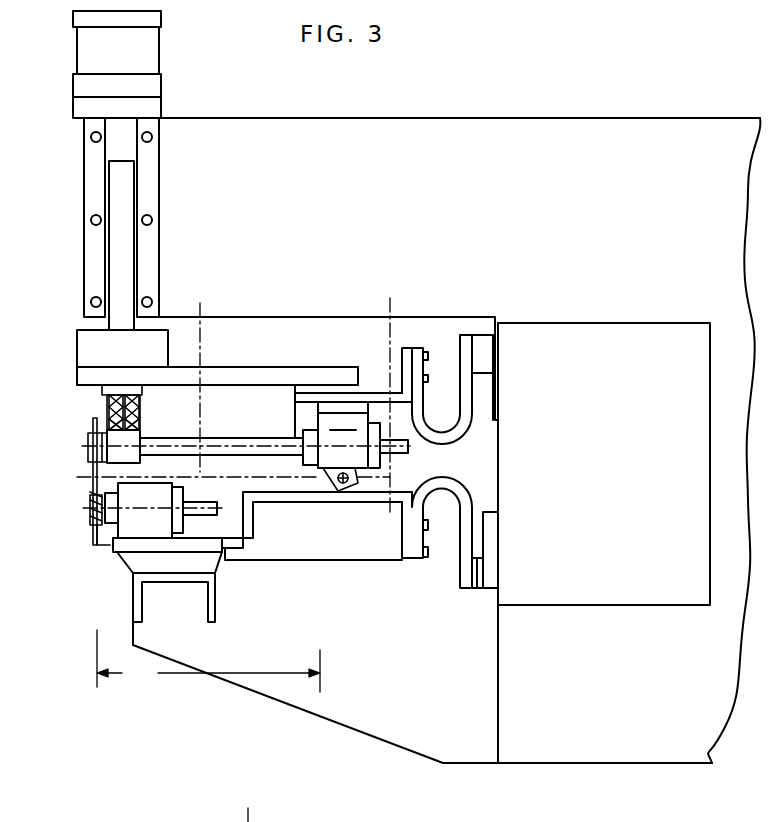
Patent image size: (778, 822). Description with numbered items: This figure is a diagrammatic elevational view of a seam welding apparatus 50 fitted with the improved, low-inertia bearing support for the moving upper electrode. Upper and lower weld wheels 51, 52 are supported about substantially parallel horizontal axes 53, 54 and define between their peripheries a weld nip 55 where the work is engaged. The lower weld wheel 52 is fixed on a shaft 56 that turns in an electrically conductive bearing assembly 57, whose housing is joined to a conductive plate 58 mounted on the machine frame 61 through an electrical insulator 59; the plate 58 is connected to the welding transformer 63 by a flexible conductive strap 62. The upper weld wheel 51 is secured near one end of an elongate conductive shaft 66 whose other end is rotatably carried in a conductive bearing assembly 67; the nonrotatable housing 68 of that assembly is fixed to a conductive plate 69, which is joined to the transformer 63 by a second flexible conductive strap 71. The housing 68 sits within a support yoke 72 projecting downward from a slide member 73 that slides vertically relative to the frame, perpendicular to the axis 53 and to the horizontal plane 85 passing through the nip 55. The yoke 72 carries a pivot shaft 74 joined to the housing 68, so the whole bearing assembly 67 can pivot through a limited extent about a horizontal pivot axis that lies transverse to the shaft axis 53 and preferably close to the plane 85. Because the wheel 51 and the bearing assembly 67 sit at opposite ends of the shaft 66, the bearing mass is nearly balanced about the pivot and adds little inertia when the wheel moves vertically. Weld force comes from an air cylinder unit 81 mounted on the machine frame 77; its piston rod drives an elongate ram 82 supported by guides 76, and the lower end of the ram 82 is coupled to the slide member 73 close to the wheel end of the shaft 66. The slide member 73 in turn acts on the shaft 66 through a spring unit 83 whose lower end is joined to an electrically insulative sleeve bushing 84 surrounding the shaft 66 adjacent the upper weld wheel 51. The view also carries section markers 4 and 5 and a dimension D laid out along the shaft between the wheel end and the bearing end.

The seam welding apparatus 50 is at (103, 714).
The upper weld wheel 51 is at (92, 426).
The lower weld wheel 52 is at (92, 530).
The axis 53 is at (263, 447).
The axis 54 is at (217, 510).
The weld zone or nip 55 is at (88, 486).
The shaft 56 is at (197, 516).
The bearing assembly 57 is at (128, 527).
The conductive member or plate 58 is at (292, 498).
The electrical insulator 59 is at (128, 568).
The machine frame 61 is at (288, 690).
The flexible conductive strap 62 is at (468, 525).
The welding transformer 63 is at (573, 607).
The elongate conductive shaft 66 is at (222, 438).
The bearing assembly 67 is at (352, 426).
The housing 68 is at (328, 423).
The conductive member or plate 69 is at (342, 403).
The flexible conductive strap 71 is at (462, 380).
The support yoke 72 is at (288, 420).
The slide member 73 is at (284, 374).
The pivot shaft 74 is at (340, 482).
The guides 76 is at (153, 248).
The machine frame 77 is at (265, 132).
The air cylinder unit 81 is at (150, 48).
The elongate ram 82 is at (132, 197).
The spring unit 83 is at (95, 402).
The electrically insulative sleeve bushing 84 is at (132, 437).
The horizontal plane 85 is at (310, 480).
The section line 4- 4 is at (390, 298).
The section line 5- 5 is at (170, 303).
The blade offset dimension D is at (208, 661).